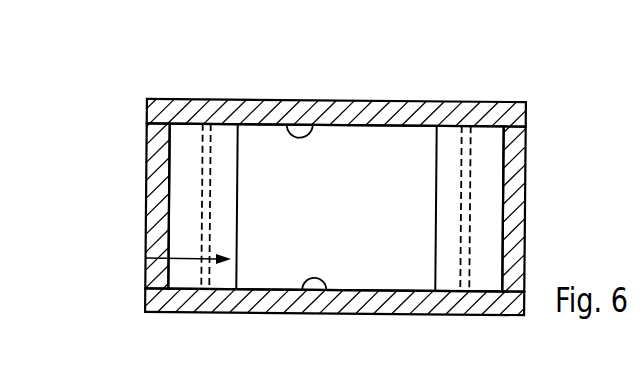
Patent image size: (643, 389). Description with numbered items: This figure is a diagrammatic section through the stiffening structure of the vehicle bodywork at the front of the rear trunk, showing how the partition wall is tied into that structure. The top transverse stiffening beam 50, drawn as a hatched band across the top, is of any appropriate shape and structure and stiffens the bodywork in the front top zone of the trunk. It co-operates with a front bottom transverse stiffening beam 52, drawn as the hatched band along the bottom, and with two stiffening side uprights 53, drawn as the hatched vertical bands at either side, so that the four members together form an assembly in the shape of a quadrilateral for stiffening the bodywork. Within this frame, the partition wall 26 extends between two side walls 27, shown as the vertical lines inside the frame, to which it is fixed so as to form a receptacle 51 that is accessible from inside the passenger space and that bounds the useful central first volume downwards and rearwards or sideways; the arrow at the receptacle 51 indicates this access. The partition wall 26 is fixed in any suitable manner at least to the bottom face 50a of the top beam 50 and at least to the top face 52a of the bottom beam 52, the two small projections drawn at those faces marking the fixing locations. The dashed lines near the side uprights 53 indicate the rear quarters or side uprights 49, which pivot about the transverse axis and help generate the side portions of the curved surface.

The partition wall 26 is at (382, 167).
The side walls 27 is at (237, 168).
The rear quarters or side uprights 49 is at (200, 176).
The top transverse stiffening beam 50 is at (276, 100).
The bottom face of the top beam 50a is at (313, 125).
The receptacle 51 is at (146, 258).
The front bottom transverse stiffening beam 52 is at (262, 313).
The top face of the bottom beam 52a is at (328, 290).
The stiffening side uprights 53 is at (146, 190).